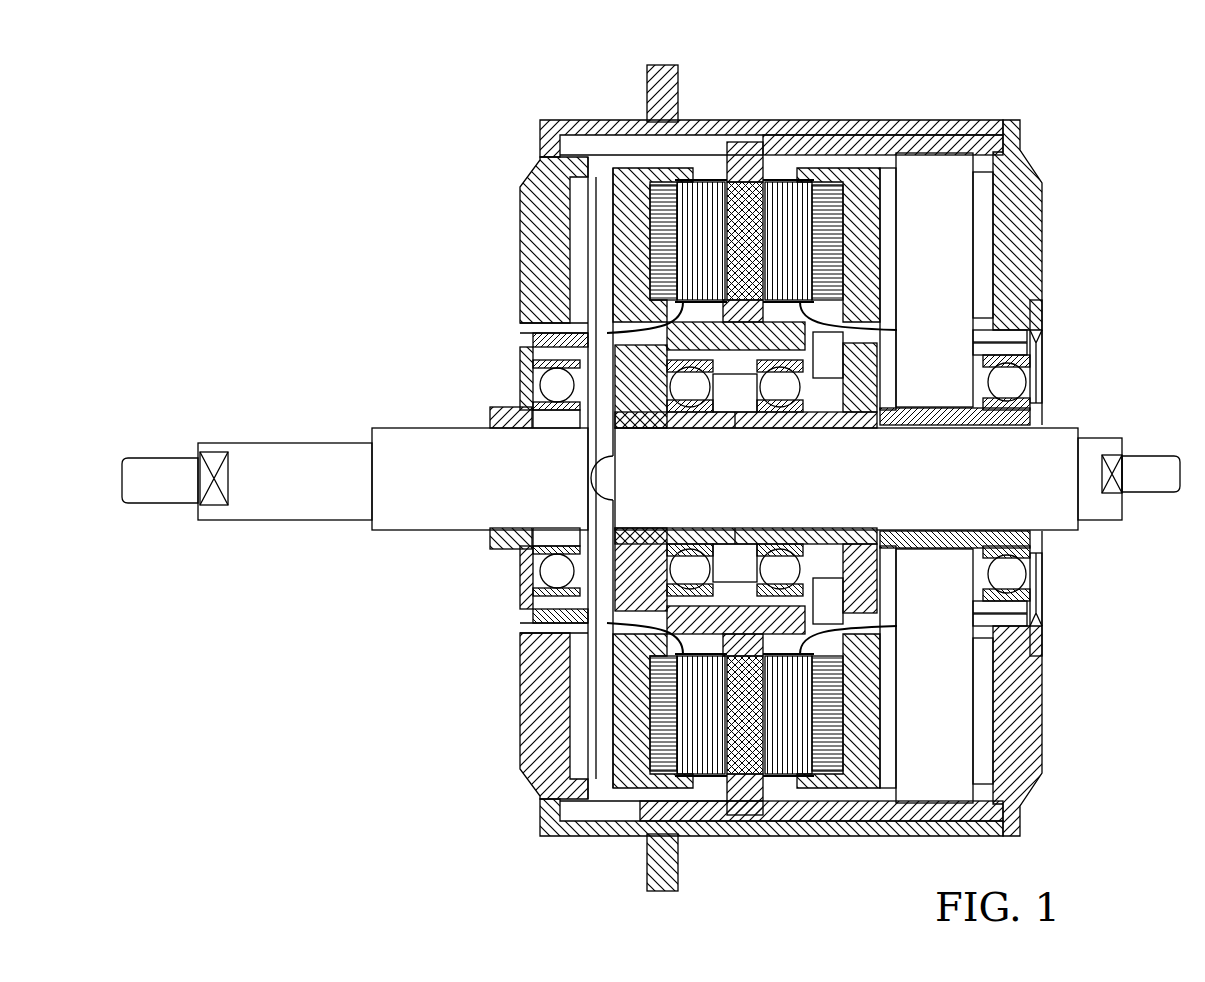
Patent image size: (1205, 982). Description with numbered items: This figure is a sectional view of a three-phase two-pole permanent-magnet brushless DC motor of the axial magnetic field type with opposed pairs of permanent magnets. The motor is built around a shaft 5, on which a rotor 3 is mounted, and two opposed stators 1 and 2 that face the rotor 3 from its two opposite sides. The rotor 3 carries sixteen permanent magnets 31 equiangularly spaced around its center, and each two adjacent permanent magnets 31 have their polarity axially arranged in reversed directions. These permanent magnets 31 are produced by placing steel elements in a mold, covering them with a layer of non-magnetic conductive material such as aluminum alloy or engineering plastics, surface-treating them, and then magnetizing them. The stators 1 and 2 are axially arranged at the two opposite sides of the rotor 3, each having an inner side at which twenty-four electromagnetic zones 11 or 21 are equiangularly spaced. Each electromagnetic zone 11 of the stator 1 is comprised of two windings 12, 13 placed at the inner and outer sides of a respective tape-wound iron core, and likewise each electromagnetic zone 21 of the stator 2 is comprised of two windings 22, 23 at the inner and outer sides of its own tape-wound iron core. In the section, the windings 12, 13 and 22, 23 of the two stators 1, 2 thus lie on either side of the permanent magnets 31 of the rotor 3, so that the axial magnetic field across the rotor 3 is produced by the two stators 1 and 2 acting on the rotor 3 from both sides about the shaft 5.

The stator 1 is at (837, 240).
The electromagnetic zone 11 is at (793, 220).
The winding 12 is at (778, 213).
The winding 13 is at (830, 227).
The stator 2 is at (663, 243).
The electromagnetic zone 21 is at (683, 200).
The winding 22 is at (713, 200).
The winding 23 is at (650, 213).
The rotor 3 is at (765, 207).
The permanent magnet 31 is at (742, 183).
The shaft 5 is at (273, 463).